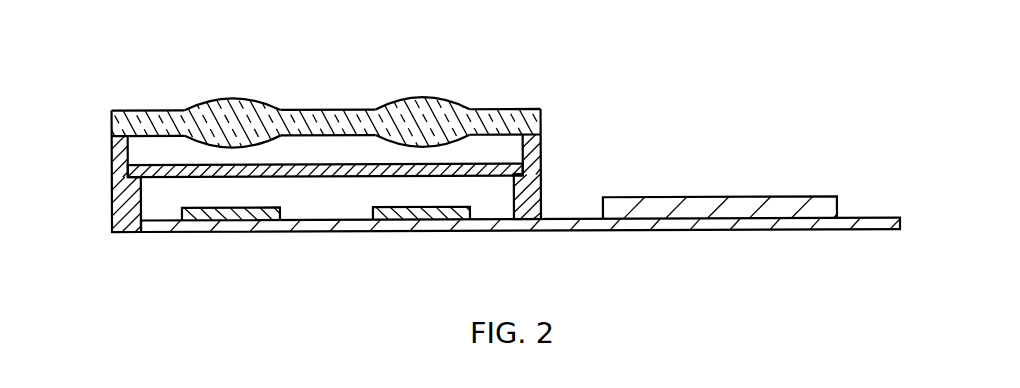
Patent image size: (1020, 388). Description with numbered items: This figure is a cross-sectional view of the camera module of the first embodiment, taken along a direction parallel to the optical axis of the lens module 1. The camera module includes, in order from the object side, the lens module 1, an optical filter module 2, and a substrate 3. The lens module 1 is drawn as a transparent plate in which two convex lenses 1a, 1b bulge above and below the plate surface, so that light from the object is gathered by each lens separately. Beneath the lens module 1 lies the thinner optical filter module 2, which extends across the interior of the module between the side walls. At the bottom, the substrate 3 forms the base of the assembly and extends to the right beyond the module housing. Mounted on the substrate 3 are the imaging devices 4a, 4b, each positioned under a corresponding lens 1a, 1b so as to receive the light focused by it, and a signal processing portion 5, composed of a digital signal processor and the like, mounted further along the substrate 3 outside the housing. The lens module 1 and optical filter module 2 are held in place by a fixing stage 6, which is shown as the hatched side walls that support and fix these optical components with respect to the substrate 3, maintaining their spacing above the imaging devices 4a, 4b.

The lens module 1 is at (322, 99).
The lens 1a is at (230, 99).
The lens 1b is at (420, 99).
The optical filter module 2 is at (503, 165).
The substrate 3 is at (573, 225).
The imaging device 4a is at (215, 216).
The imaging device 4b is at (425, 216).
The signal processing portion 5 is at (726, 197).
The fixing stage 6 is at (125, 225).